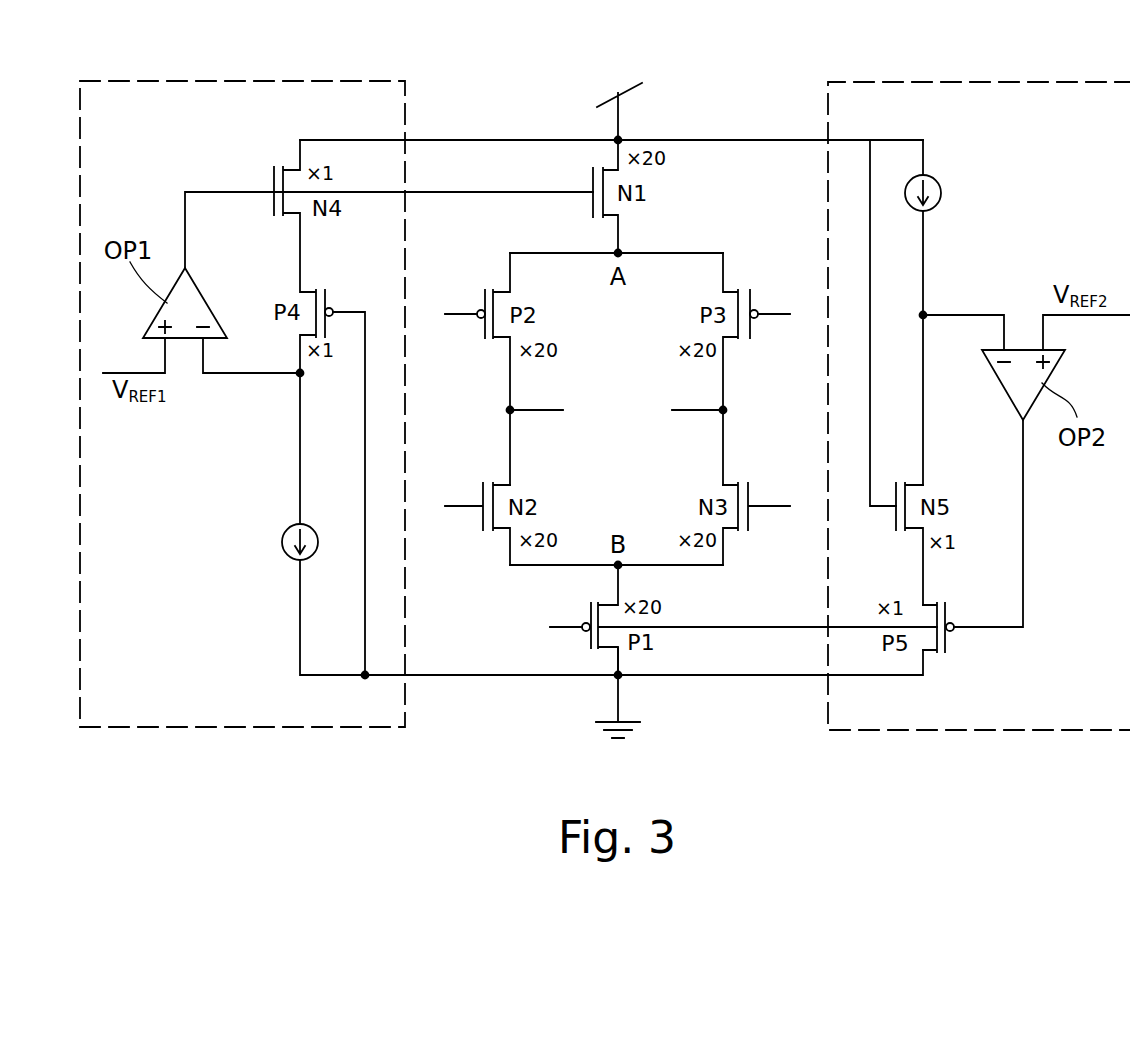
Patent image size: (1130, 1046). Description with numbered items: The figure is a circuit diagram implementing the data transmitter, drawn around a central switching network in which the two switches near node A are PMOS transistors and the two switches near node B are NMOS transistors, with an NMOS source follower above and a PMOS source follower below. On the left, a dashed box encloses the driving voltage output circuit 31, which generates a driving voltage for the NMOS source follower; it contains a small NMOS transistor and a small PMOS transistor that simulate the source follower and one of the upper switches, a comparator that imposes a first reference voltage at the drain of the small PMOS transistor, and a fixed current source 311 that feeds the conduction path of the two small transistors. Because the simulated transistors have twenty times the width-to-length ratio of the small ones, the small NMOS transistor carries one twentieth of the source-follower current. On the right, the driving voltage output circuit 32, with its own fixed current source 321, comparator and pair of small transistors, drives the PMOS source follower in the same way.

The driving voltage output circuit 31 is at (245, 80).
The driving voltage output circuit 32 is at (999, 80).
The fixed current source 311 is at (281, 536).
The fixed current source 321 is at (943, 185).